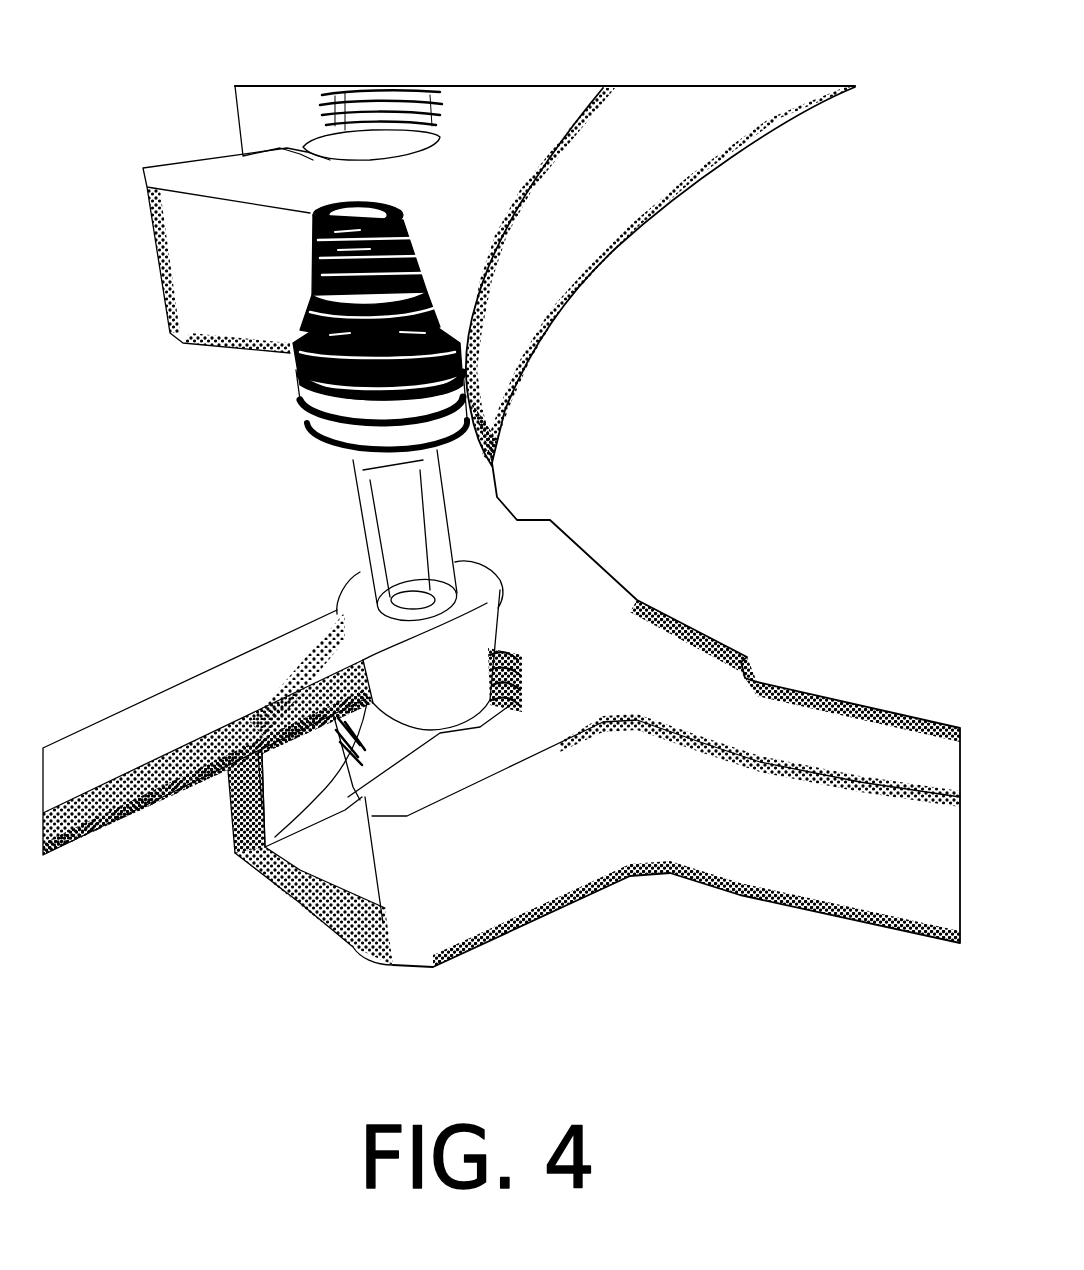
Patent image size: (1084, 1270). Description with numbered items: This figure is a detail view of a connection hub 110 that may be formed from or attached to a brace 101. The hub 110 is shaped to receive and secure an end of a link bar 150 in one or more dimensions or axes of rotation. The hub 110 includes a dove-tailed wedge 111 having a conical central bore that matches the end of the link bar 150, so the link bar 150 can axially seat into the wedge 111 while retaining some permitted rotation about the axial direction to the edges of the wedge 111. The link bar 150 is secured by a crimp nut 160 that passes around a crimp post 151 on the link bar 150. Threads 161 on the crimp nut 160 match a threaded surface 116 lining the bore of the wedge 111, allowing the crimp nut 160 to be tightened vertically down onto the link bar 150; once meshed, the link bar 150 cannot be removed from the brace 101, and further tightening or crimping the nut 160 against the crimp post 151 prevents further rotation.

The brace 101 is at (563, 242).
The connection hub 110 is at (220, 180).
The dove-tailed wedge 111 is at (380, 882).
The threaded surface 116 is at (367, 100).
The link bar 150 is at (132, 737).
The crimp post 151 is at (403, 520).
The crimp nut 160 is at (290, 353).
The threads 161 is at (470, 407).